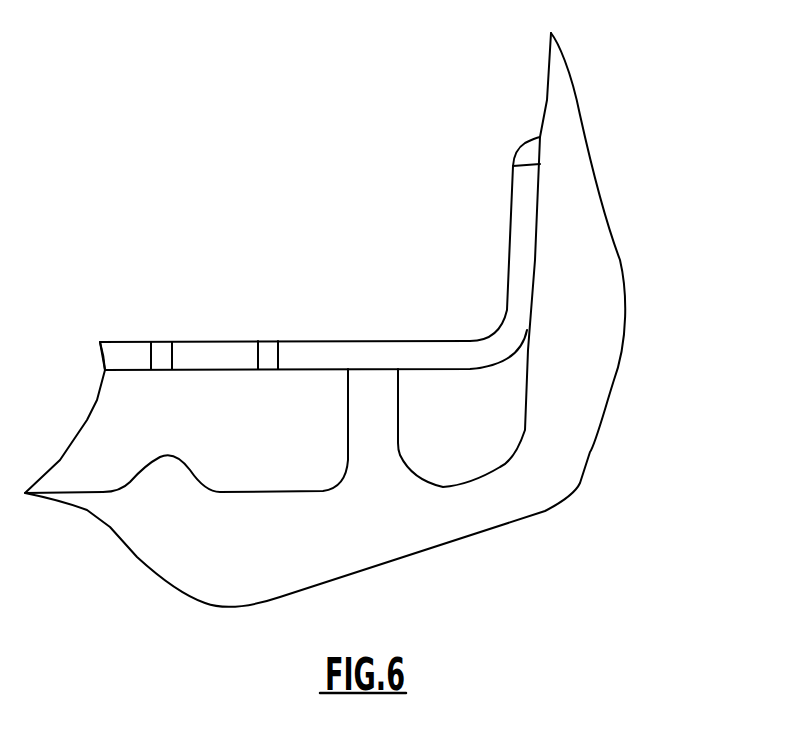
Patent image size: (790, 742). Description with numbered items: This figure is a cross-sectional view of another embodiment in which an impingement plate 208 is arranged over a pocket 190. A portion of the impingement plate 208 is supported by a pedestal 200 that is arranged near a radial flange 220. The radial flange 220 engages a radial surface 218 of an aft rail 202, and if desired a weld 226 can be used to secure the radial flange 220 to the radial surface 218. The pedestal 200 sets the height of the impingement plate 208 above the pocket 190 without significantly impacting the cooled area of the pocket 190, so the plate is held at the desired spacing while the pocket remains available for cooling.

The pocket 190 is at (267, 432).
The pedestal 200 is at (380, 417).
The aft rail 202 is at (600, 252).
The impingement plate 208 is at (317, 313).
The radial surface 218 is at (547, 98).
The radial flange 220 is at (520, 235).
The weld 226 is at (533, 153).